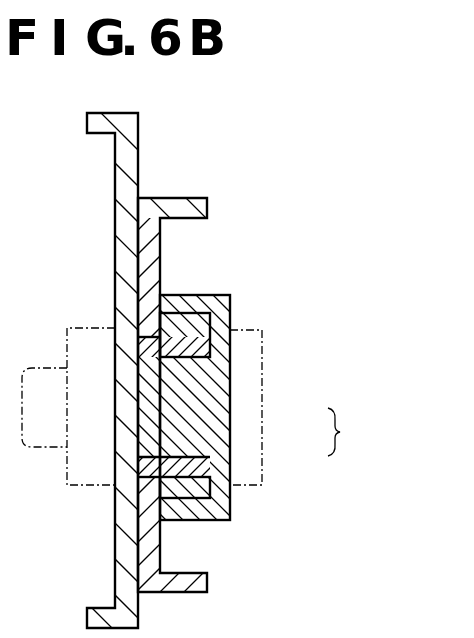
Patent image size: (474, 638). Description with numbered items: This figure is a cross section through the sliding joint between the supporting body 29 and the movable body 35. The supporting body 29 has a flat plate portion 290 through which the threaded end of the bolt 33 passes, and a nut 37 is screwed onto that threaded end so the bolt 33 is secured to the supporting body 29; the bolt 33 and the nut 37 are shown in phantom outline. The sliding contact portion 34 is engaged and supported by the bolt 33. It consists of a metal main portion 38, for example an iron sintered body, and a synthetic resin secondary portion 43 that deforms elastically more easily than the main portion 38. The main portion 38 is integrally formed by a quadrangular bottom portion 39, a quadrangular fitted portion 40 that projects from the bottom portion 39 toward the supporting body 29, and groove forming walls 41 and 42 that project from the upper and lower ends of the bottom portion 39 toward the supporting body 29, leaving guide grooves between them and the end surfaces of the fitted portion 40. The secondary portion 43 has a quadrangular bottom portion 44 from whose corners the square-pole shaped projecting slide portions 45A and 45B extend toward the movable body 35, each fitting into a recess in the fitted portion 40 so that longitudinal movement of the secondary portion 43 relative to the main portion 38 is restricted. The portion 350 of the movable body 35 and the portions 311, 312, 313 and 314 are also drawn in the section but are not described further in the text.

The supporting body 29 is at (237, 369).
The flat plate portion 290 is at (126, 190).
The movable body 35 is at (237, 369).
The bracket stem 350 is at (152, 246).
The groove forming wall 41 is at (175, 297).
The groove forming wall 42 is at (187, 521).
The projecting slide portion 45A is at (136, 320).
The projecting slide portion 45B is at (138, 500).
The holder top wall 311 is at (232, 305).
The holder bottom wall 312 is at (232, 513).
The holder upper side portion 313 is at (228, 368).
The holder lower side portion 314 is at (233, 485).
The bottom portion 39 is at (223, 319).
The fitted portion 40 is at (138, 388).
The bottom portion 44 is at (138, 435).
The secondary portion 43 is at (237, 369).
The main portion 38 is at (232, 430).
The sliding contact portion 34 is at (237, 369).
The bolt 33 is at (30, 450).
The nut 37 is at (78, 490).